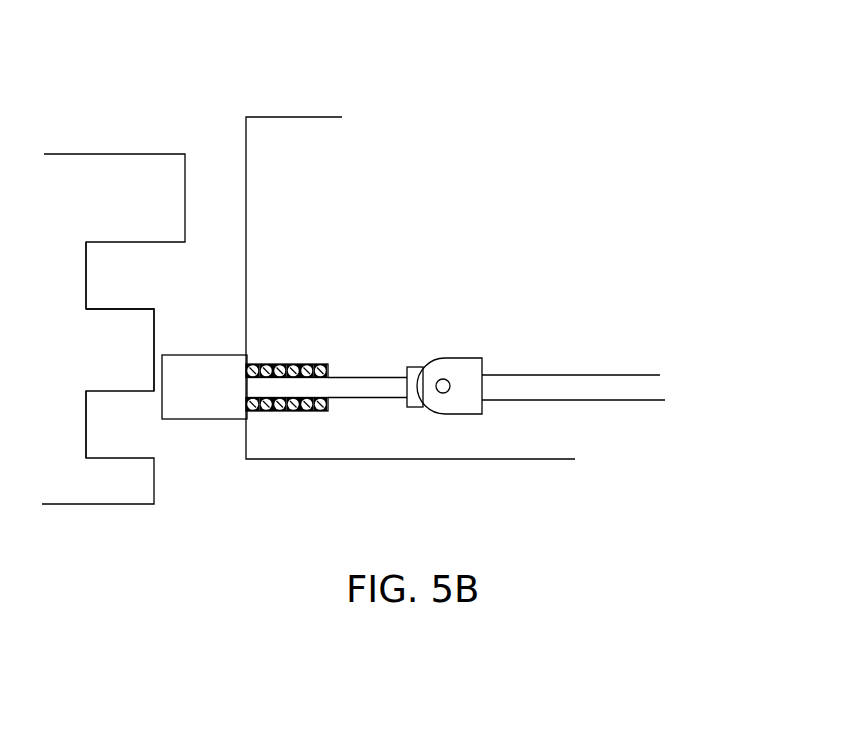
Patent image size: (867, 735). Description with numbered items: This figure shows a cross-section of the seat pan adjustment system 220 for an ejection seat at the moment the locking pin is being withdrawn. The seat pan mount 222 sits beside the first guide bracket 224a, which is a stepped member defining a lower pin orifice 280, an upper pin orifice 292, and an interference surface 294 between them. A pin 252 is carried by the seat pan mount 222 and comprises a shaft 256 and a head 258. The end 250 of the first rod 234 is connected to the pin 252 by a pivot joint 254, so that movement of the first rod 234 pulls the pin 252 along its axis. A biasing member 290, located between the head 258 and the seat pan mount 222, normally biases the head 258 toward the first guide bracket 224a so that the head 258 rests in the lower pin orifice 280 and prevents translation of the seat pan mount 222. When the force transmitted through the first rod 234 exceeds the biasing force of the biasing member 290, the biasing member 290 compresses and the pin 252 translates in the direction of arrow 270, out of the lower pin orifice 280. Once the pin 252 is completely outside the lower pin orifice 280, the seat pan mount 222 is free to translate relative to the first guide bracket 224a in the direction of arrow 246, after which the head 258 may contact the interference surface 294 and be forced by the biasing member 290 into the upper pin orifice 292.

The seat pan adjustment system 220 is at (645, 112).
The seat pan mount 222 is at (311, 127).
The first guide bracket 224a is at (120, 165).
The first rod 234 is at (613, 388).
The arrow 246 is at (564, 25).
The end of first rod 250 is at (450, 410).
The pin 252 is at (337, 418).
The pivot joint 254 is at (442, 386).
The shaft 256 is at (381, 380).
The head 258 is at (208, 386).
The arrow 270 is at (800, 389).
The lower pin orifice 280 is at (105, 417).
The biasing member 290 is at (300, 363).
The upper pin orifice 292 is at (90, 258).
The interference surface 294 is at (166, 243).